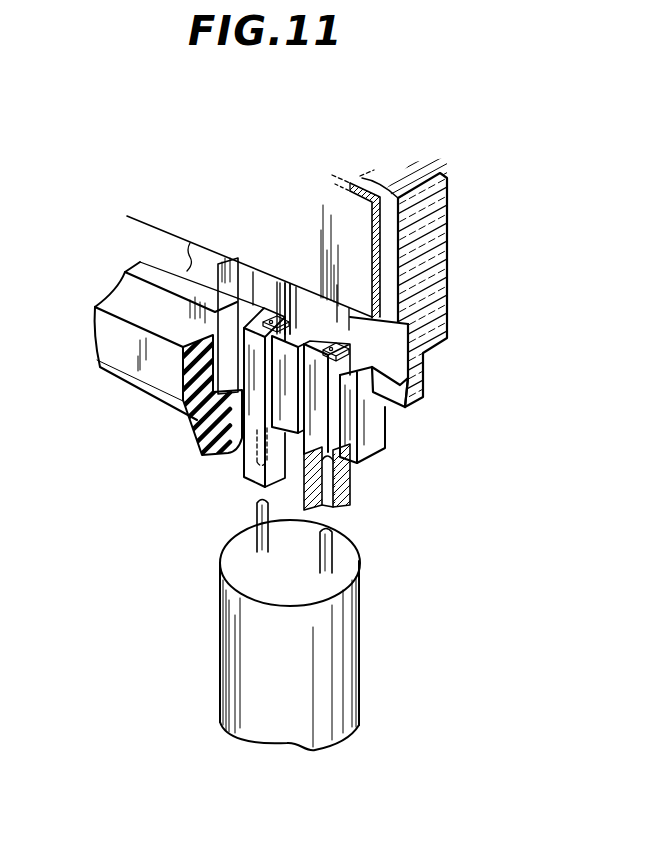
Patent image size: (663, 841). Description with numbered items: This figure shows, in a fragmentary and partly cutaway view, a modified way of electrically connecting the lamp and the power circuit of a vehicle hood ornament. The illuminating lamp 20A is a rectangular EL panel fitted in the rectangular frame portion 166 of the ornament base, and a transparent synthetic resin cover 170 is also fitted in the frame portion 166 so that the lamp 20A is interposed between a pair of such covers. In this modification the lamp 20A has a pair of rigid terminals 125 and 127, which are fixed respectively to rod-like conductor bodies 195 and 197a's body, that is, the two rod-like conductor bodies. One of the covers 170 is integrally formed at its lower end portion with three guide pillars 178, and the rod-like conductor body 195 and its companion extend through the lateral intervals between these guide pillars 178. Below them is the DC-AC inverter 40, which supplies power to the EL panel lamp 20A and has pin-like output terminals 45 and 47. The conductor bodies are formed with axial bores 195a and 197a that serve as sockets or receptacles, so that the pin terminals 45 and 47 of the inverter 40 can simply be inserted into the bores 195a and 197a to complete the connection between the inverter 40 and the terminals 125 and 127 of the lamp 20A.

The illuminating lamp 20A is at (360, 183).
The cover 170 is at (443, 226).
The rectangular frame portion 166 is at (118, 338).
The guide pillar 178 is at (306, 334).
The rigid terminal 125 is at (277, 290).
The rigid terminal 127 is at (343, 307).
The rod-like conductor body 195 is at (253, 443).
The axial bore 195a is at (262, 462).
The axial bore 197a is at (330, 507).
The pin-like output terminal 45 is at (260, 512).
The pin-like output terminal 47 is at (330, 543).
The DC-AC inverter 40 is at (250, 672).